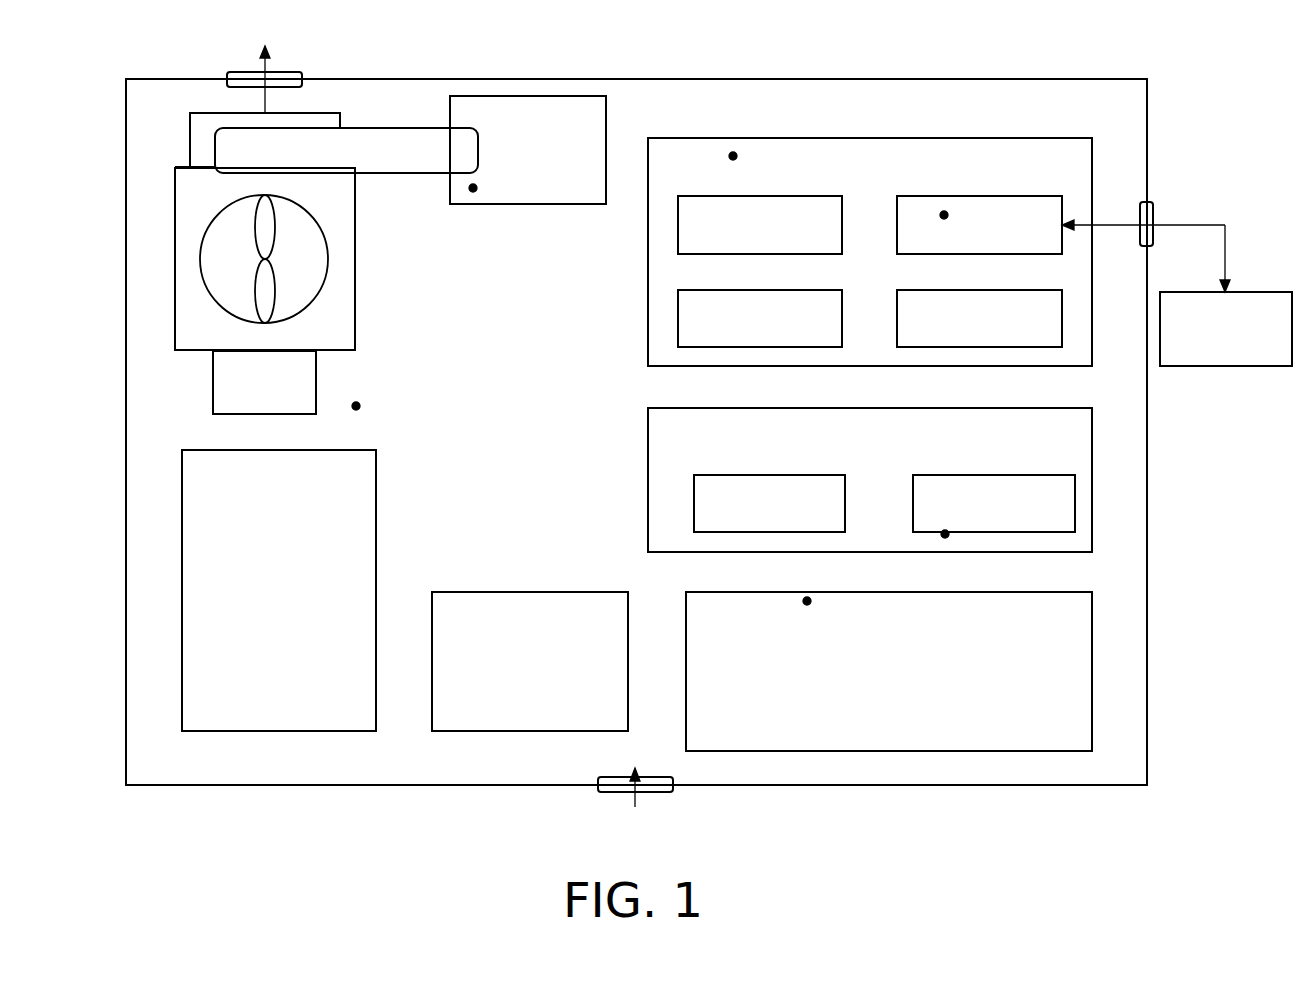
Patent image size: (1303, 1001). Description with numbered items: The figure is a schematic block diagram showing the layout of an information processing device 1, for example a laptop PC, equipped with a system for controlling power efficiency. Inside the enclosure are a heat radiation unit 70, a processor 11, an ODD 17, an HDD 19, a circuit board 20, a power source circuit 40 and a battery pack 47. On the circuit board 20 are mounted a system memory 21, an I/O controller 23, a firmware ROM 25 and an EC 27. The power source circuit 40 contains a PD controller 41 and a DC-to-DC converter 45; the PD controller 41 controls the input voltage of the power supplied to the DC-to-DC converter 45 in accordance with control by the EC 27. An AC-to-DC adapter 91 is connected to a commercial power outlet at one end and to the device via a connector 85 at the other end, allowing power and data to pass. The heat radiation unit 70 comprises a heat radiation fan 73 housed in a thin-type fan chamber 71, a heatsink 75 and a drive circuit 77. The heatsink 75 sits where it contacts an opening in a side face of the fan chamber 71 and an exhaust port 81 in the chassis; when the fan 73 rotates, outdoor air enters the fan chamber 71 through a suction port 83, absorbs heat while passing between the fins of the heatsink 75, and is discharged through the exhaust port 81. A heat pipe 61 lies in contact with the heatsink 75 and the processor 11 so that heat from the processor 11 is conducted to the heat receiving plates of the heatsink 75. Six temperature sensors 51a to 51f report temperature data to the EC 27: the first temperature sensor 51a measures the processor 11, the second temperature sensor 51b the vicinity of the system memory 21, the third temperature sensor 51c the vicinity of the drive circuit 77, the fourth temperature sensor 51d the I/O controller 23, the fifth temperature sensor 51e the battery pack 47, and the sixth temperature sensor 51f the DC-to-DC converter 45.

The information processing device 1 is at (1072, 79).
The processor 11 is at (528, 96).
The optical disk drive (ODD) 17 is at (318, 450).
The hard disk drive (HDD) 19 is at (568, 592).
The circuit board 20 is at (1028, 138).
The system memory 21 is at (786, 196).
The I/O controller 23 is at (1002, 196).
The firmware ROM 25 is at (786, 290).
The embedded controller (EC) 27 is at (1002, 290).
The power source circuit 40 is at (1028, 408).
The PD controller 41 is at (784, 475).
The DC-to-DC converter 45 is at (985, 475).
The battery pack 47 is at (1028, 592).
The first temperature sensor 51a is at (473, 192).
The second temperature sensor 51b is at (735, 152).
The third temperature sensor 51c is at (358, 402).
The fourth temperature sensor 51d is at (946, 211).
The fifth temperature sensor 51e is at (808, 597).
The sixth temperature sensor 51f is at (943, 538).
The heat pipe 61 is at (385, 128).
The heat radiation unit 70 is at (183, 157).
The fan chamber 71 is at (355, 310).
The heat radiation fan 73 is at (280, 225).
The heatsink 75 is at (315, 113).
The drive circuit 77 is at (213, 382).
The exhaust port 81 is at (258, 68).
The suction port 83 is at (645, 776).
The connector 85 is at (1148, 202).
The AC-to-DC adapter 91 is at (1246, 292).